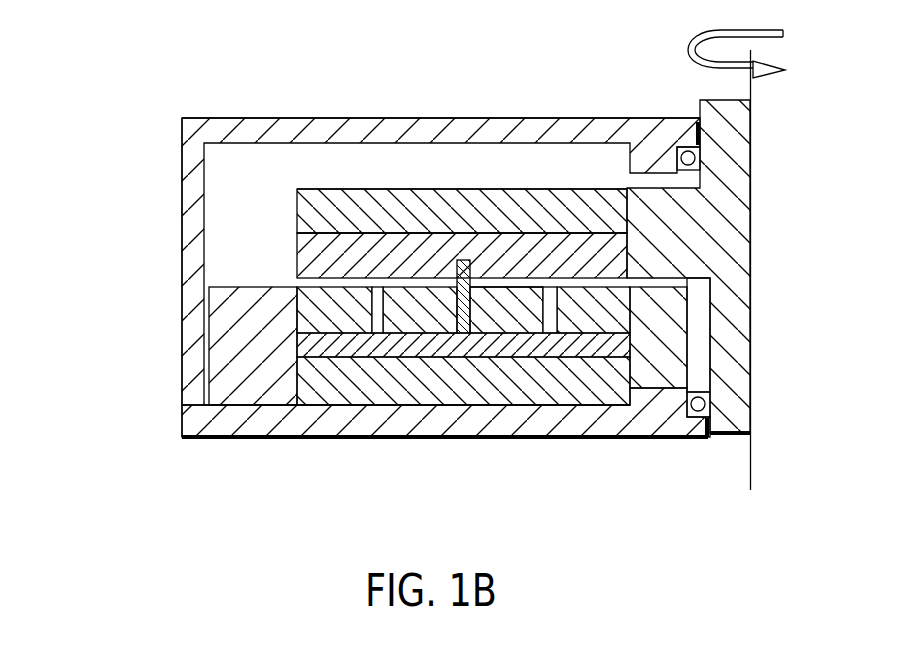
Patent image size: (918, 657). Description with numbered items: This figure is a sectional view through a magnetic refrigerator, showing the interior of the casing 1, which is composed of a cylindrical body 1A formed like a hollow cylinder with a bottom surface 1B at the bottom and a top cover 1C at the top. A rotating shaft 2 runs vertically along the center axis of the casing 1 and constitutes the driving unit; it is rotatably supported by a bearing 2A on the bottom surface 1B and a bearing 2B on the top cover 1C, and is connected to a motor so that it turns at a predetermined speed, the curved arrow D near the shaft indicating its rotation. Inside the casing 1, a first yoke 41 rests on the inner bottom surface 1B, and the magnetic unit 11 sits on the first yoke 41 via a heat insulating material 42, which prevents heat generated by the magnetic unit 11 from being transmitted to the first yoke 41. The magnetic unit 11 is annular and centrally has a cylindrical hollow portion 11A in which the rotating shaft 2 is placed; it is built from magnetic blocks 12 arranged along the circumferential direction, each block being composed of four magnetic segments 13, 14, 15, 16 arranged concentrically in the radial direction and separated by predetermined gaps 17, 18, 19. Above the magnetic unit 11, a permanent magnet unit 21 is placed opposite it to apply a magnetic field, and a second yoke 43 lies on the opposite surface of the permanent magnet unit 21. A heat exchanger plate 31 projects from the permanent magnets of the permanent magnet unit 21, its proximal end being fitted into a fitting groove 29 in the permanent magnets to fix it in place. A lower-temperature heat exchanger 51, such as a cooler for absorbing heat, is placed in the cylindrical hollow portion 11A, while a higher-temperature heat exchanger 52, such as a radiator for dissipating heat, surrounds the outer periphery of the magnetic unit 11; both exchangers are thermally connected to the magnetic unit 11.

The casing 1 is at (461, 279).
The cylindrical body 1A is at (185, 298).
The bottom surface 1B is at (220, 438).
The top cover 1C is at (242, 118).
The rotating shaft 2 is at (707, 278).
The bearing 2A is at (698, 411).
The bearing 2B is at (686, 151).
The magnetic unit 11 is at (472, 279).
The cylindrical hollow portion 11A is at (698, 318).
The magnetic block 12 is at (463, 306).
The magnetic segment 13 is at (580, 325).
The magnetic segment 14 is at (507, 323).
The magnetic segment 15 is at (425, 325).
The magnetic segment 16 is at (342, 325).
The gap 17 is at (483, 290).
The gap 18 is at (550, 290).
The gap 19 is at (377, 293).
The permanent magnet unit 21 is at (347, 177).
The fitting groove 29 is at (467, 260).
The heat exchanger plate 31 is at (318, 257).
The first yoke 41 is at (308, 387).
The heat insulating material 42 is at (307, 348).
The second yoke 43 is at (383, 197).
The lower-temperature heat exchanger 51 is at (646, 377).
The higher-temperature heat exchanger 52 is at (262, 400).
The rotation direction D is at (747, 30).